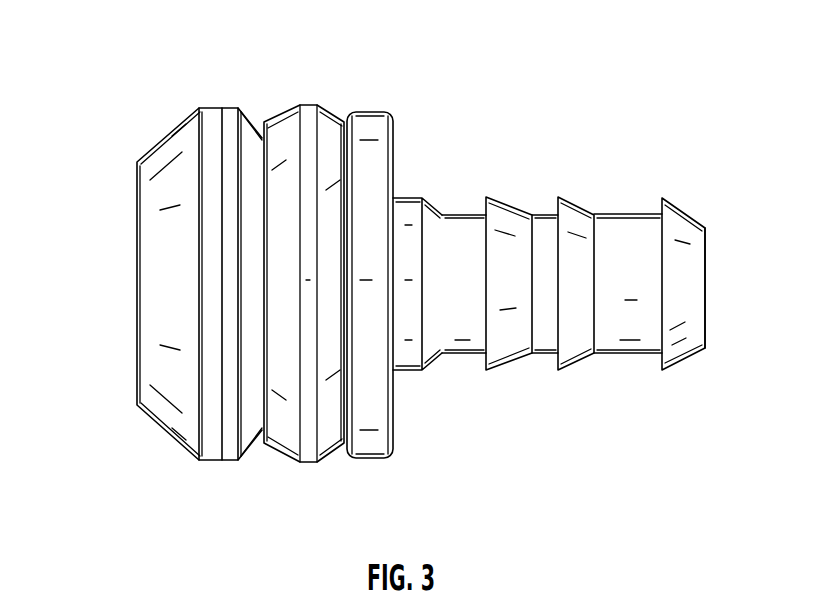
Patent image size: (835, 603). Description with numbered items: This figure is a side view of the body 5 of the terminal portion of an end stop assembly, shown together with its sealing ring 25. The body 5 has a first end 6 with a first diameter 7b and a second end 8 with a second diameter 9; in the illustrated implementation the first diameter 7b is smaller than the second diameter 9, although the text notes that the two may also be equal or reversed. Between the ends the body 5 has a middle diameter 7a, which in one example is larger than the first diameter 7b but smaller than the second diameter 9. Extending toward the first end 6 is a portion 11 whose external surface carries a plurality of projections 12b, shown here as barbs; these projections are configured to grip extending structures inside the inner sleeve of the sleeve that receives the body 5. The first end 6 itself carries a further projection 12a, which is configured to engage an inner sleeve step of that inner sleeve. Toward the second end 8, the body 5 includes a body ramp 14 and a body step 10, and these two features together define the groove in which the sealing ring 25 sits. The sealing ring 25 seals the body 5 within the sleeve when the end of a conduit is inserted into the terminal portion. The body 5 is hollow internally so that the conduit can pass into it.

The body 5 is at (217, 453).
The first end 6 is at (702, 228).
The middle diameter 7a is at (413, 458).
The first diameter 7b is at (765, 229).
The second end 8 is at (138, 405).
The second diameter 9 is at (44, 163).
The body step 10 is at (368, 458).
The portion 11 is at (633, 357).
The projection 12a is at (678, 363).
The projections 12b is at (500, 207).
The body ramp 14 is at (168, 155).
The sealing ring 25 is at (308, 125).